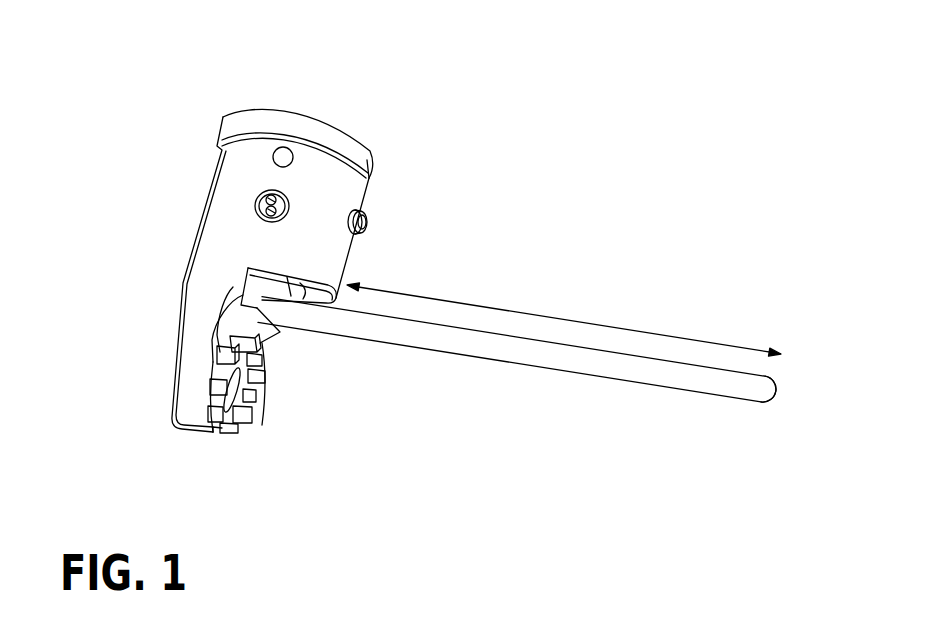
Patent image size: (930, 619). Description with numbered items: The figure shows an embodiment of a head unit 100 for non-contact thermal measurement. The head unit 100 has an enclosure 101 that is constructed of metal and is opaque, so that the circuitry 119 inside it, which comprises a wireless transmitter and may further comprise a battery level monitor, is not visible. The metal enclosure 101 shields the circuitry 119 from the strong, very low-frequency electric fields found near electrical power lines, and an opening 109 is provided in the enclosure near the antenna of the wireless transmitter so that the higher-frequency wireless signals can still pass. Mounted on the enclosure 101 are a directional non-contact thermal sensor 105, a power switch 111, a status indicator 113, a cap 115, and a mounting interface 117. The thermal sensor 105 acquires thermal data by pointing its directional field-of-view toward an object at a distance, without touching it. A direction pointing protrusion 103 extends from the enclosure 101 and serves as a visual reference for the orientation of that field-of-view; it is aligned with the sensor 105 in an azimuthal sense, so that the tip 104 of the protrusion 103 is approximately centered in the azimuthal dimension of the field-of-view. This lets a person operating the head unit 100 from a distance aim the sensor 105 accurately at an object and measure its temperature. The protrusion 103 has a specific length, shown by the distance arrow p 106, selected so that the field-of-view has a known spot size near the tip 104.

The head unit 100 is at (334, 367).
The enclosure 101 is at (200, 205).
The direction pointing protrusion 103 is at (533, 353).
The tip 104 is at (781, 396).
The directional non-contact thermal sensor 105 is at (370, 220).
The distance arrow p 106 is at (558, 318).
The opening 109 is at (252, 291).
The power switch 111 is at (342, 181).
The status indicator 113 is at (288, 202).
The cap 115 is at (260, 108).
The mounting interface 117 is at (253, 385).
The circuitry 119 is at (370, 177).